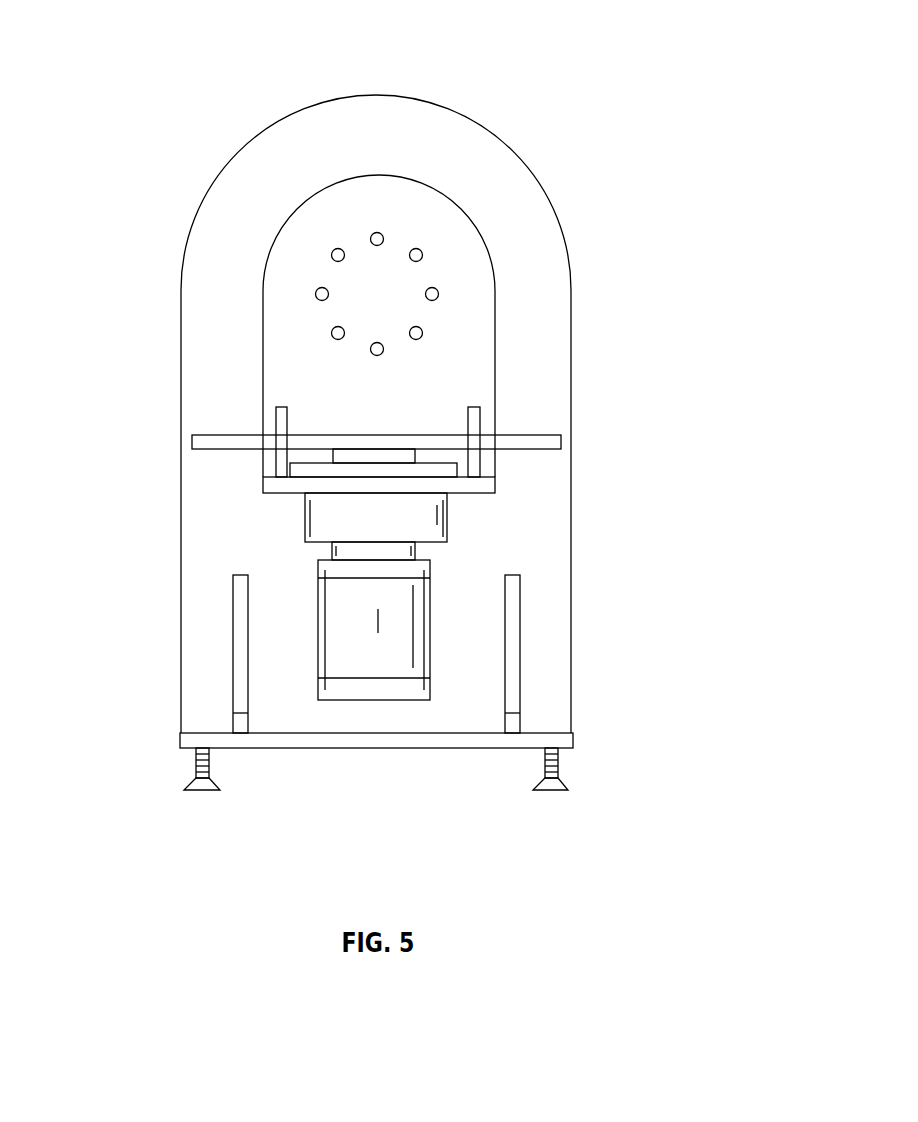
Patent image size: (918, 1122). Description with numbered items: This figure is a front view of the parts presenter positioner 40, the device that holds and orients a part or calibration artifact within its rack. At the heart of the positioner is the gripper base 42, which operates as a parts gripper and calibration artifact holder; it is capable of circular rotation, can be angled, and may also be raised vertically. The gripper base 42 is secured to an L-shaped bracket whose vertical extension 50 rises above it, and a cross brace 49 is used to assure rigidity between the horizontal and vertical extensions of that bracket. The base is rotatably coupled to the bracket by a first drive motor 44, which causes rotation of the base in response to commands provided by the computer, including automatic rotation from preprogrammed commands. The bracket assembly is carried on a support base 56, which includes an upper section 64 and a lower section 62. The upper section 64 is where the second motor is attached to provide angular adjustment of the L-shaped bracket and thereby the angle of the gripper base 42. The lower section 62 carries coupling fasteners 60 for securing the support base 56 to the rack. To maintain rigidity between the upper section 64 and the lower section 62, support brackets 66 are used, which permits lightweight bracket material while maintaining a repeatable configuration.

The parts presenter positioner 40 is at (423, 370).
The gripper base 42 is at (562, 435).
The first drive motor 44 is at (428, 590).
The cross brace 49 is at (477, 420).
The vertical extension 50 is at (457, 225).
The support base 56 is at (575, 678).
The coupling fasteners 60 is at (210, 797).
The lower section 62 is at (572, 740).
The upper section 64 is at (420, 115).
The support brackets 66 is at (233, 610).